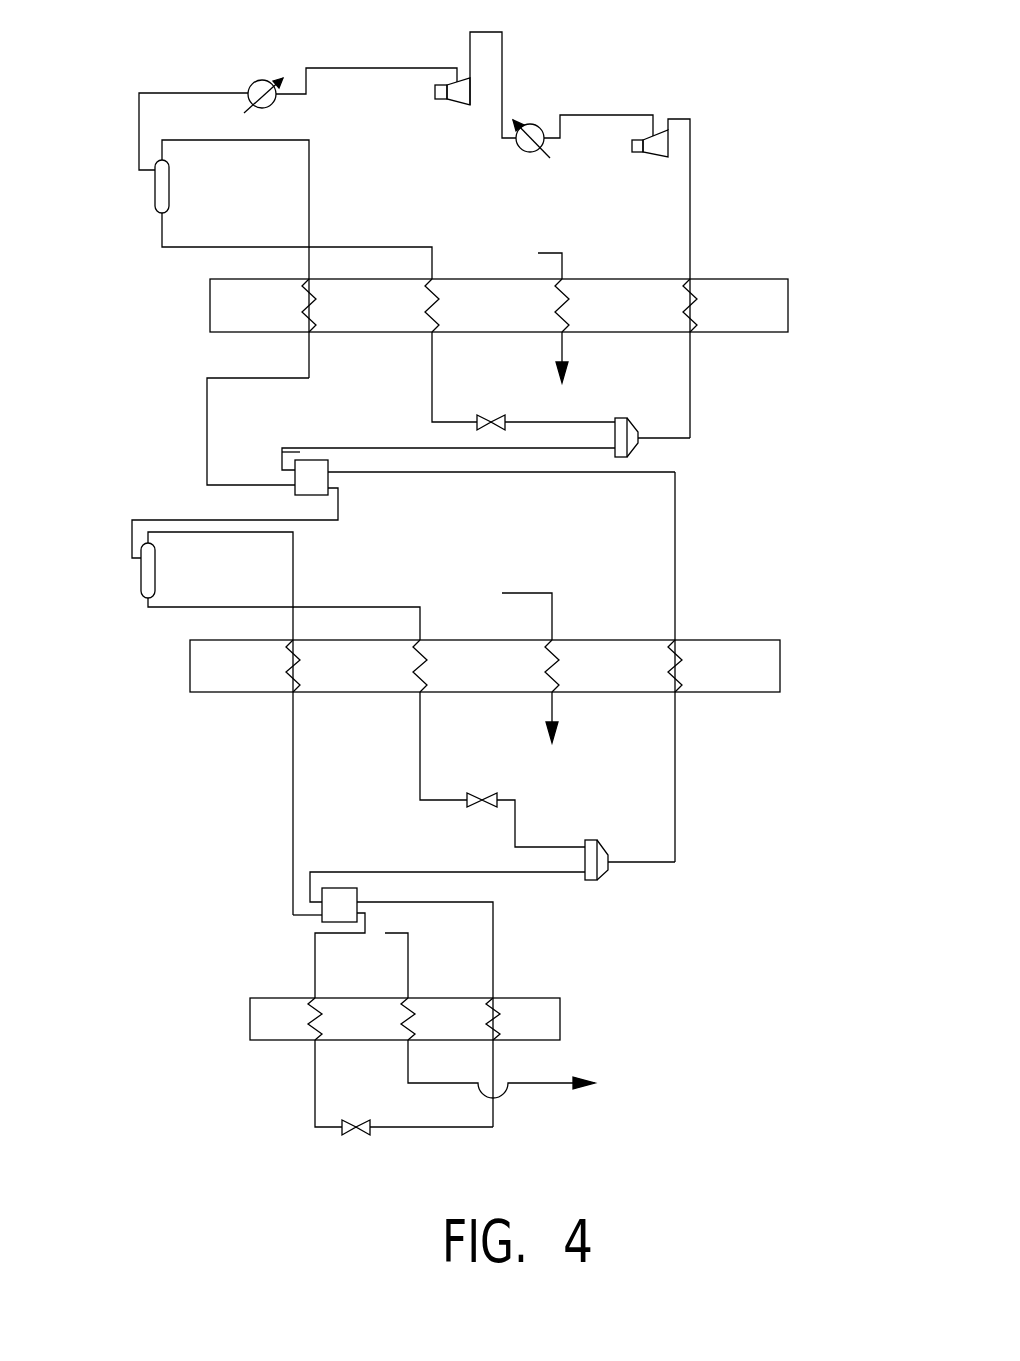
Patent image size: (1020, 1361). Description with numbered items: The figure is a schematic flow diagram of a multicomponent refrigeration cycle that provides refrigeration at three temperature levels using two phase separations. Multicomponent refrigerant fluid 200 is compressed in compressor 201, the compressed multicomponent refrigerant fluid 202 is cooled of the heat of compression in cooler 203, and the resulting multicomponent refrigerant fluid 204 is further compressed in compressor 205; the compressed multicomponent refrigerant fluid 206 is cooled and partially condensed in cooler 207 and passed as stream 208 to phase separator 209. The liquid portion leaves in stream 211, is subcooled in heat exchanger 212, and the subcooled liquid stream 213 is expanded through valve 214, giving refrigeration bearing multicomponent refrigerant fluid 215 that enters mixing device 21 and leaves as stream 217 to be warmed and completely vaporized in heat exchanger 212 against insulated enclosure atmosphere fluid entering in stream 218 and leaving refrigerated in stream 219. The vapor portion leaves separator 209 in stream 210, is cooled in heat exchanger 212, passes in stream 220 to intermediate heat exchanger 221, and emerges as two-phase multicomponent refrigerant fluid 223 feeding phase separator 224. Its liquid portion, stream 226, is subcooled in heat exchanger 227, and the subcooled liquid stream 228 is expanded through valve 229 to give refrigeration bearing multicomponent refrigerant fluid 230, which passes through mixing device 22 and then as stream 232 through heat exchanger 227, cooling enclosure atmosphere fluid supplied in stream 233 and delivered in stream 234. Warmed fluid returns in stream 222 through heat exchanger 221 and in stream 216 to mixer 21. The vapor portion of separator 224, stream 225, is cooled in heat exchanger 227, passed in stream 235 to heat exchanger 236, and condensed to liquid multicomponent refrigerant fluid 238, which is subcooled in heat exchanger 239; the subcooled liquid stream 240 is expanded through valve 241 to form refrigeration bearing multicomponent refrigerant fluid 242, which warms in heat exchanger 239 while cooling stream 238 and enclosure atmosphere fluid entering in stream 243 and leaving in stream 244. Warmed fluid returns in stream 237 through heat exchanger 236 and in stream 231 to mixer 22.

The mixing device 21 is at (642, 412).
The mixing device 22 is at (612, 837).
The multicomponent refrigerant fluid 200 is at (690, 193).
The compressor 201 is at (650, 158).
The compressed multicomponent refrigerant fluid 202 is at (605, 115).
The cooler 203 is at (520, 157).
The multicomponent refrigerant fluid 204 is at (502, 45).
The compressor 205 is at (435, 99).
The compressed multicomponent refrigerant fluid 206 is at (353, 68).
The cooler 207 is at (255, 82).
The stream 208 is at (139, 125).
The phase separator 209 is at (169, 190).
The stream 210 is at (309, 165).
The stream 211 is at (177, 247).
The heat exchanger 212 is at (788, 305).
The subcooled liquid stream 213 is at (433, 372).
The valve 214 is at (527, 402).
The refrigeration bearing multicomponent refrigerant fluid 215 is at (603, 402).
The stream 216 is at (377, 446).
The stream 217 is at (690, 427).
The stream 218 is at (562, 265).
The stream 219 is at (562, 345).
The stream 220 is at (207, 427).
The intermediate heat exchanger 221 is at (290, 451).
The stream 222 is at (423, 472).
The multicomponent refrigerant fluid 223 is at (338, 503).
The phase separator 224 is at (155, 572).
The stream 225 is at (293, 578).
The stream 226 is at (177, 610).
The heat exchanger 227 is at (780, 662).
The subcooled liquid stream 228 is at (420, 713).
The valve 229 is at (480, 793).
The refrigeration bearing multicomponent refrigerant fluid 230 is at (537, 847).
The stream 231 is at (412, 868).
The stream 232 is at (675, 757).
The stream 233 is at (552, 620).
The stream 234 is at (557, 710).
The stream 235 is at (293, 735).
The heat exchanger 236 is at (327, 877).
The stream 237 is at (493, 945).
The multicomponent refrigerant fluid 238 is at (315, 967).
The heat exchanger 239 is at (560, 1020).
The subcooled liquid stream 240 is at (315, 1065).
The valve 241 is at (367, 1120).
The refrigeration bearing multicomponent refrigerant fluid 242 is at (412, 1127).
The stream 243 is at (408, 970).
The stream 244 is at (398, 1072).